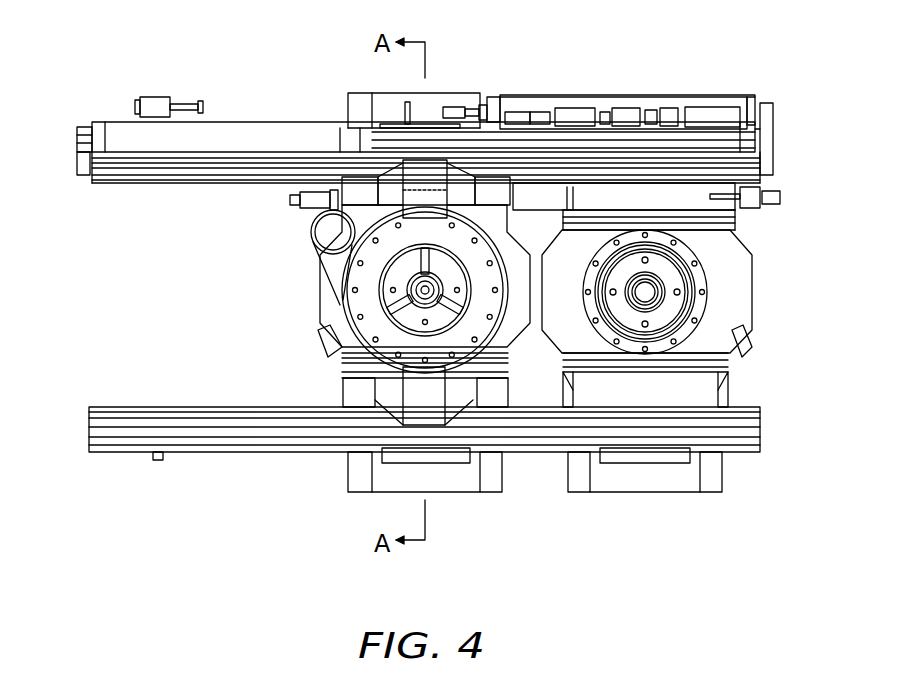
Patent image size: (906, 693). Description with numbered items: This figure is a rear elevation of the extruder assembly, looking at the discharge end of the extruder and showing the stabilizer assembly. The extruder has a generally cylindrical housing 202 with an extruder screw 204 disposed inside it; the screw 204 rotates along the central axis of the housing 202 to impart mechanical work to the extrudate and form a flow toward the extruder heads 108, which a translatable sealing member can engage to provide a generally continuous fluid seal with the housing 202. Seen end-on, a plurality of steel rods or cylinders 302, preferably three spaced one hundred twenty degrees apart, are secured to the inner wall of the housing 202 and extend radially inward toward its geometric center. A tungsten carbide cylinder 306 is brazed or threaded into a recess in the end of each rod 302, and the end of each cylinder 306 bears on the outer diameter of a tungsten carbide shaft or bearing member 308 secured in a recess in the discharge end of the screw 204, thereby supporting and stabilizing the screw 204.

The extruder heads 108 is at (658, 86).
The housing 202 is at (428, 177).
The extruder screw 204 is at (480, 230).
The rods or cylinders 302 is at (473, 310).
The tungsten carbide cylinder 306 is at (445, 281).
The tungsten carbide shaft or bearing member 308 is at (407, 280).